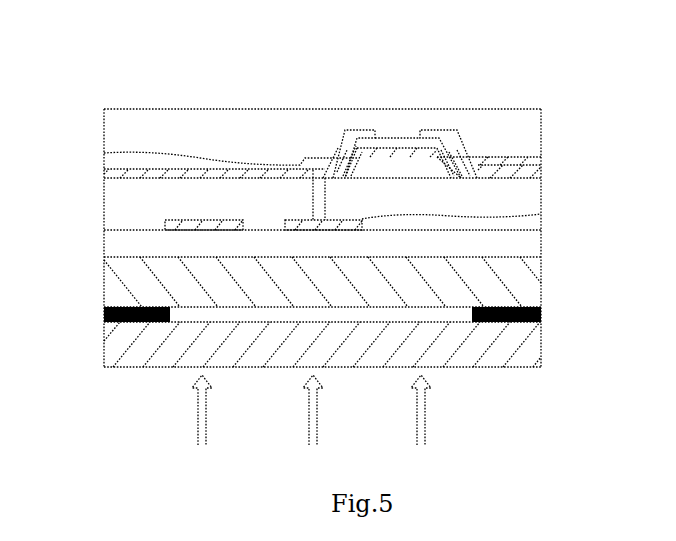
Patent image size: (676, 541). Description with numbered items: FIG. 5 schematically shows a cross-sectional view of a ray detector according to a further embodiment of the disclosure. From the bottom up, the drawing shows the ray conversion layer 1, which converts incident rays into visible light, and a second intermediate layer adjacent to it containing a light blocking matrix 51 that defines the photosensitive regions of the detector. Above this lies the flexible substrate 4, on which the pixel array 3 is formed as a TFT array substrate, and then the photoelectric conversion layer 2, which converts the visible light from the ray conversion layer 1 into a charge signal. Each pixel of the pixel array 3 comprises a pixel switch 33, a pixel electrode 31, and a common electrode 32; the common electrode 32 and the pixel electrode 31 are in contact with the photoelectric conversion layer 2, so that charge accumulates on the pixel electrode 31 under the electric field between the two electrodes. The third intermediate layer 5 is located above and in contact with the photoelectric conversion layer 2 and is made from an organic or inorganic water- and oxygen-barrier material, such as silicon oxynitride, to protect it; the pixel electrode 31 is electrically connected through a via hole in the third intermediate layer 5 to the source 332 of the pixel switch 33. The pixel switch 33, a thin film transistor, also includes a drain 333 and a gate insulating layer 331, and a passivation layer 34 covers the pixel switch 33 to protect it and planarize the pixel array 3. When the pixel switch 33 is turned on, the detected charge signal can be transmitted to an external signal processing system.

The ray conversion layer 1 is at (541, 343).
The photoelectric conversion layer 2 is at (541, 247).
The pixel array 3 is at (541, 133).
The flexible substrate 4 is at (541, 283).
The third intermediate layer 5 is at (541, 208).
The pixel electrode 31 is at (541, 218).
The common electrode 32 is at (165, 222).
The pixel switch 33 is at (395, 135).
The passivation layer 34 is at (128, 128).
The light blocking matrix 51 is at (104, 310).
The gate insulating layer 331 is at (104, 175).
The source 332 is at (104, 157).
The drain 333 is at (541, 160).